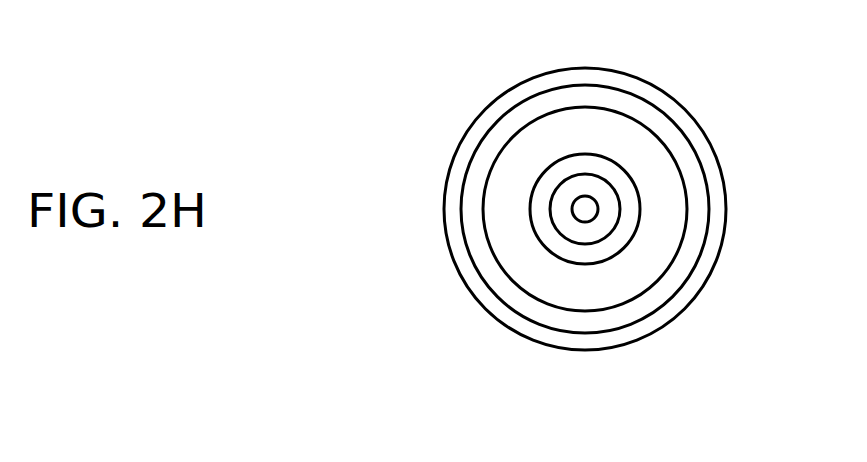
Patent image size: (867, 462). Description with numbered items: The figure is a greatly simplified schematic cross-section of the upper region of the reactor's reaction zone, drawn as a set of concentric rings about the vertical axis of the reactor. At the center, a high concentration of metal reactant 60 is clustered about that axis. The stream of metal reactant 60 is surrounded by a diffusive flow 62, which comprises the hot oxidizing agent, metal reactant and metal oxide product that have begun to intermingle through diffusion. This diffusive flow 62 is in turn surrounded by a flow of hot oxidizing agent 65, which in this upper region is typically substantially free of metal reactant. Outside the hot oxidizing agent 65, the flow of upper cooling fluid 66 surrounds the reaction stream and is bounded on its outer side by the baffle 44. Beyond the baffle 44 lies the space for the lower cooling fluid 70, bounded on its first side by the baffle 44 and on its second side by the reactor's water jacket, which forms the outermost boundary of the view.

The metal reactant 60 is at (587, 210).
The diffusive flow 62 is at (610, 202).
The flow of hot oxidizing agent 65 is at (630, 215).
The upper cooling fluid 66 is at (640, 258).
The baffle 44 is at (637, 312).
The lower cooling fluid 70 is at (605, 342).